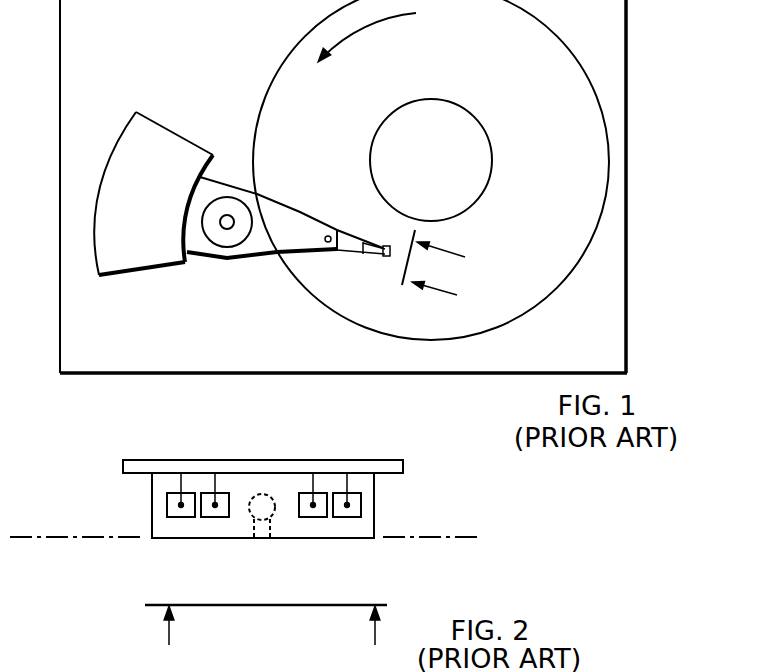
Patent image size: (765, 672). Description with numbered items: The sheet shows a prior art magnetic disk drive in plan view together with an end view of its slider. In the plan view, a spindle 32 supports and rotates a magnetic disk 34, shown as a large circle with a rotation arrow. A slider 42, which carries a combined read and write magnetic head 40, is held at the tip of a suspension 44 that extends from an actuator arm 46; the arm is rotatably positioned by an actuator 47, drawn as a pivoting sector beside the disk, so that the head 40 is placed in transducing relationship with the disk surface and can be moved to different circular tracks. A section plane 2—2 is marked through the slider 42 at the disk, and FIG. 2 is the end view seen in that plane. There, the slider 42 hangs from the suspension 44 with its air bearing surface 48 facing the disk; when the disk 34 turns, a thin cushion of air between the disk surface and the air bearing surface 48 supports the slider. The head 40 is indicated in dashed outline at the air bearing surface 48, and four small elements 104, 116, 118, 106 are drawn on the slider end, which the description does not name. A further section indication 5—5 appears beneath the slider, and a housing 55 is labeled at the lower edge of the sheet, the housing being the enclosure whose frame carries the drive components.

In FIG. 1, the plane 2— 2 is at (445, 269).
In FIG. 2, the section line 5- 5 is at (266, 638).
In FIG. 1, the spindle 32 is at (449, 99).
In FIG. 1, the magnetic disk 34 is at (545, 163).
In FIG. 1, the magnetic head 40 is at (385, 257).
In FIG. 2, the magnetic head 40 is at (253, 513).
In FIG. 1, the slider 42 is at (388, 247).
In FIG. 2, the slider 42 is at (152, 500).
In FIG. 1, the suspension 44 is at (348, 256).
In FIG. 2, the suspension 44 is at (263, 466).
In FIG. 1, the actuator arm 46 is at (272, 200).
In FIG. 1, the actuator 47 is at (167, 128).
In FIG. 2, the air bearing surface 48 is at (50, 539).
In FIG. 2, the bonding pad 104 is at (166, 495).
In FIG. 2, the bonding pad 106 is at (329, 494).
In FIG. 2, the bonding pad 116 is at (201, 496).
In FIG. 2, the bonding pad 118 is at (297, 494).
In FIG. 2, the housing 55 is at (620, 671).